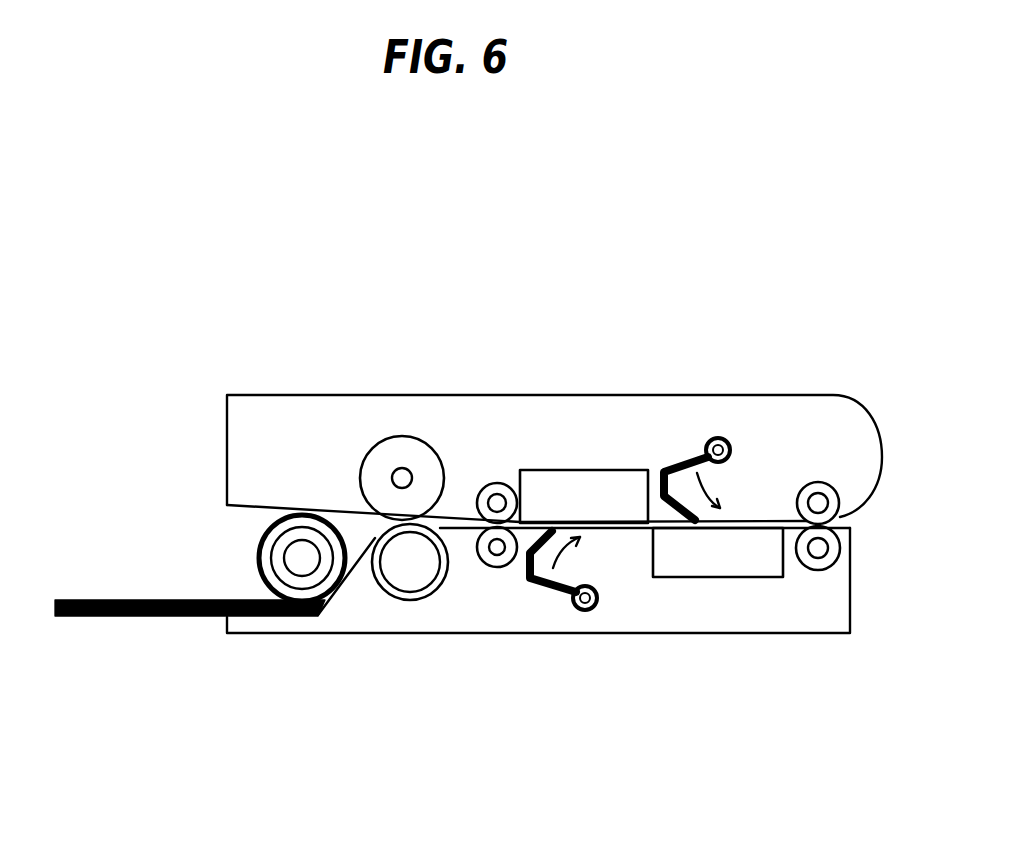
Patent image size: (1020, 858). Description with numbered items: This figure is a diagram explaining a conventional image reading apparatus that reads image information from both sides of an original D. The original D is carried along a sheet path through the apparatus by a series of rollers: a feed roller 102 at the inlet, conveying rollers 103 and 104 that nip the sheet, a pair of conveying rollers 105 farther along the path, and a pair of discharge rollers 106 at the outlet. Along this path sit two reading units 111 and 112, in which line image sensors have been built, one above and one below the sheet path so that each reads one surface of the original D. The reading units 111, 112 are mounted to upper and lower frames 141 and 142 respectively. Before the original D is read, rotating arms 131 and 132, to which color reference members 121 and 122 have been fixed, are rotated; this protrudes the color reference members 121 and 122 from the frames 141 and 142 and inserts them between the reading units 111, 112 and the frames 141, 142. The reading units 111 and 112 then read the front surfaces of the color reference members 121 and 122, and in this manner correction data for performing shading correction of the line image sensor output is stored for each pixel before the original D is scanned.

The original D is at (132, 598).
The feed roller 102 is at (257, 548).
The conveying roller 103 is at (393, 437).
The conveying roller 104 is at (383, 590).
The conveying roller pair 105 is at (492, 483).
The discharge roller pair 106 is at (838, 486).
The reading unit 111 is at (607, 498).
The reading unit 112 is at (736, 563).
The color reference member 121 is at (541, 518).
The color reference member 122 is at (686, 530).
The rotating arm 131 is at (552, 592).
The rotating arm 132 is at (690, 452).
The frame 141 is at (758, 395).
The frame 142 is at (617, 640).